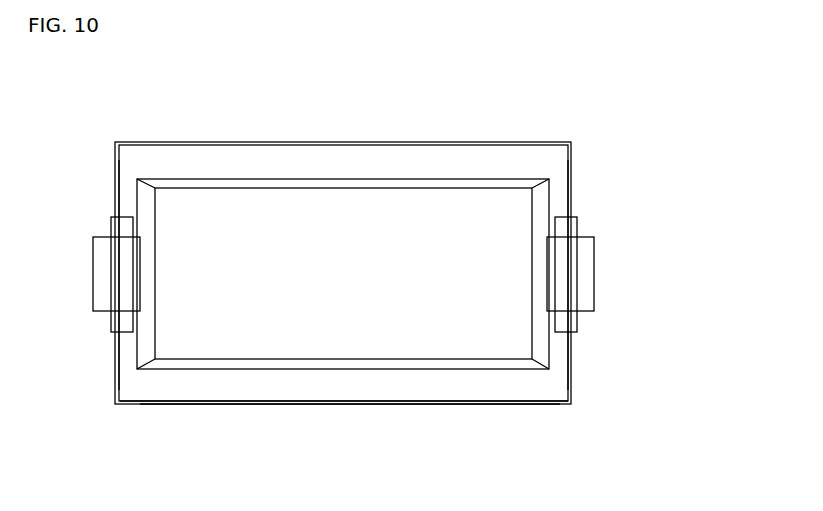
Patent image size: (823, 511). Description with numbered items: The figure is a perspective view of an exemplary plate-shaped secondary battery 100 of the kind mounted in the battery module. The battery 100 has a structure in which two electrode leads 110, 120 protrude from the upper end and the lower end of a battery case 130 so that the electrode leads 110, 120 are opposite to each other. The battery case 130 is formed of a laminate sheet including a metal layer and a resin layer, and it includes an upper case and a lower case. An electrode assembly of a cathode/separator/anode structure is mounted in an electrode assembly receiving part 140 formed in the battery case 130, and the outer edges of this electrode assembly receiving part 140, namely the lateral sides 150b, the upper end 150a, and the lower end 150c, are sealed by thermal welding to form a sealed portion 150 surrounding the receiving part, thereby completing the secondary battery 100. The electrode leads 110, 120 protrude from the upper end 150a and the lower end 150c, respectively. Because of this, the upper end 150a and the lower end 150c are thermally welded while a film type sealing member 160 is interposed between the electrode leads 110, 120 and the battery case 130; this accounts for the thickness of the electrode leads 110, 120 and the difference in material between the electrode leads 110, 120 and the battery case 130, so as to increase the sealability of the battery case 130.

The plate-shaped secondary battery 100 is at (78, 117).
The electrode lead 110 is at (582, 271).
The electrode lead 120 is at (98, 260).
The battery case 130 is at (338, 400).
The electrode assembly receiving part 140 is at (502, 218).
The sealed portion 150 is at (467, 158).
The upper end 150a is at (127, 348).
The lateral side 150b is at (443, 388).
The lower end 150c is at (562, 367).
The film type sealing member 160 is at (557, 322).